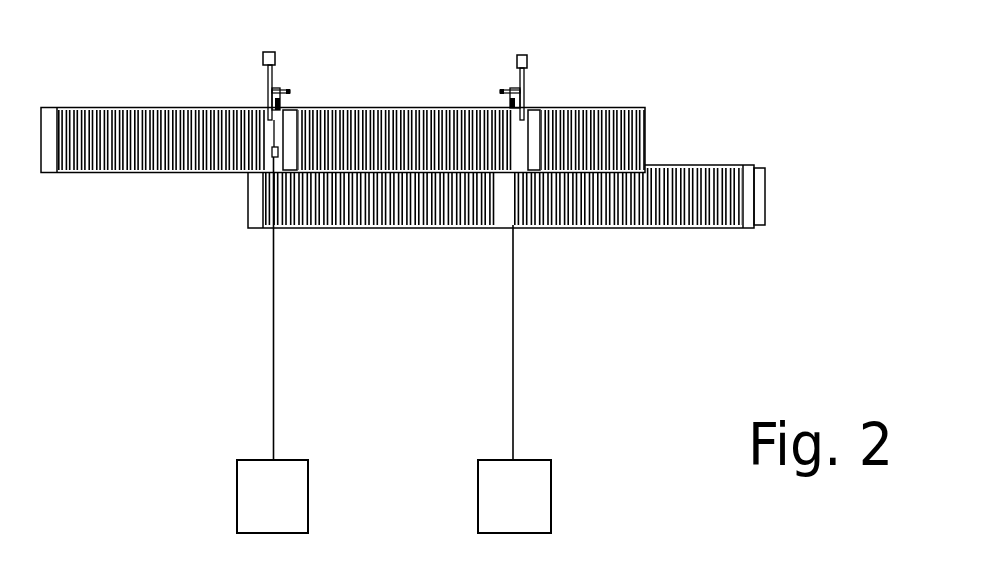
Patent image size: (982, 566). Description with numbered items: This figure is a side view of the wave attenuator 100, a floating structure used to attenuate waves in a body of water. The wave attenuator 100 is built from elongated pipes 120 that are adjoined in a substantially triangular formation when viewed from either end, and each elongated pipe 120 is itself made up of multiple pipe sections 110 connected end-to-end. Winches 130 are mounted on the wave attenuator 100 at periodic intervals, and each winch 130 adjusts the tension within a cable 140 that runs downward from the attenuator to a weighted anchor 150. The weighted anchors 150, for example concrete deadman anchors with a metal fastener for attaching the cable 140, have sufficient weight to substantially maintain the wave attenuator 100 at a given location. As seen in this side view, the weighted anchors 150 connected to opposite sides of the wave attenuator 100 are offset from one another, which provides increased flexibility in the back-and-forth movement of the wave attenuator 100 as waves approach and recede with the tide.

The wave attenuator 100 is at (427, 266).
The pipe sections 110 is at (733, 165).
The elongated pipes 120 is at (560, 253).
The winches 130 is at (255, 87).
The cables 140 is at (273, 343).
The weighted anchors 150 is at (308, 477).